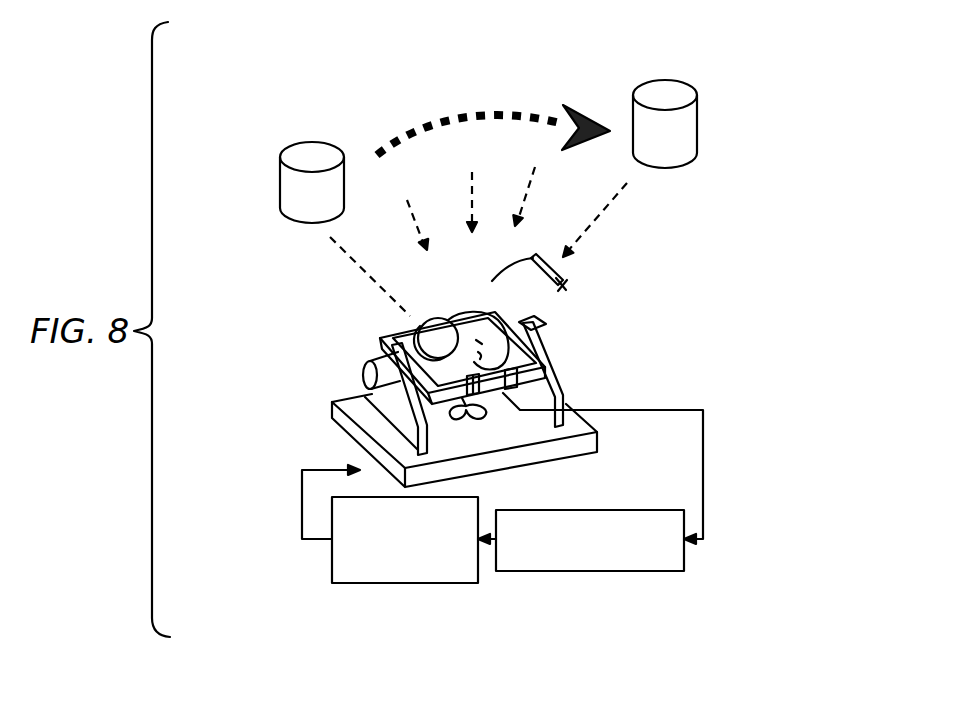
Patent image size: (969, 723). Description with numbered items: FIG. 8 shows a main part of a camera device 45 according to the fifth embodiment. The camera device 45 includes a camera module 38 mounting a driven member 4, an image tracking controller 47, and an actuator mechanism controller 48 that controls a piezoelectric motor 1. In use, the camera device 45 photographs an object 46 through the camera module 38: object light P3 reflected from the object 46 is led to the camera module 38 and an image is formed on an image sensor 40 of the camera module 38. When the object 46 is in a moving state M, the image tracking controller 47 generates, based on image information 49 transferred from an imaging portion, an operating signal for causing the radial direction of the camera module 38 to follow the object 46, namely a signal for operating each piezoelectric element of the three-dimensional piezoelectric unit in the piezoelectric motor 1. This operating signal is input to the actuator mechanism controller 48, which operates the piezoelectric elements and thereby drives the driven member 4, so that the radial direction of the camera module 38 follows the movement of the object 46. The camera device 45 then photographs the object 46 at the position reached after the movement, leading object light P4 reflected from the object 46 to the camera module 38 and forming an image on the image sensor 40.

The piezoelectric motor 1 is at (724, 442).
The driven member 4 is at (492, 296).
The camera module 38 is at (418, 337).
The image sensor 40 is at (548, 340).
The camera device 45 is at (744, 144).
The object 46 is at (314, 152).
The image tracking controller 47 is at (565, 571).
The actuator mechanism controller 48 is at (418, 585).
The image information 49 is at (704, 500).
The moving state M is at (466, 115).
The object light P3 is at (348, 255).
The object light P4 is at (592, 228).